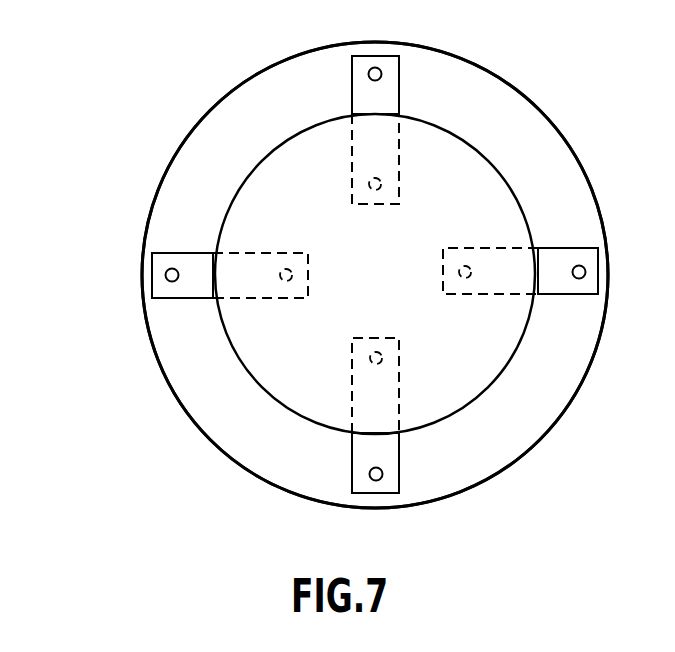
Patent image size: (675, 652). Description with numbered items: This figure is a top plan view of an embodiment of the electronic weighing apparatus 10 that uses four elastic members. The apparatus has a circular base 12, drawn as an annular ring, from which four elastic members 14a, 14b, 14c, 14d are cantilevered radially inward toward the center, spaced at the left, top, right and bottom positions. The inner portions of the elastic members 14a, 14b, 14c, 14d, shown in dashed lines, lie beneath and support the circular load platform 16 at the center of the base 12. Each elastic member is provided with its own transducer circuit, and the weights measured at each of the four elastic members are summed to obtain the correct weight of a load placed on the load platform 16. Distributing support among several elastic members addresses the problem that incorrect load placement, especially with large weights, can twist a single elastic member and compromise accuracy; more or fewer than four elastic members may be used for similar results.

The electronic weighing apparatus 10 is at (100, 405).
The base 12 is at (545, 437).
The elastic member 14a is at (202, 299).
The elastic member 14b is at (399, 96).
The elastic member 14c is at (570, 295).
The elastic member 14d is at (399, 465).
The load platform 16 is at (383, 261).